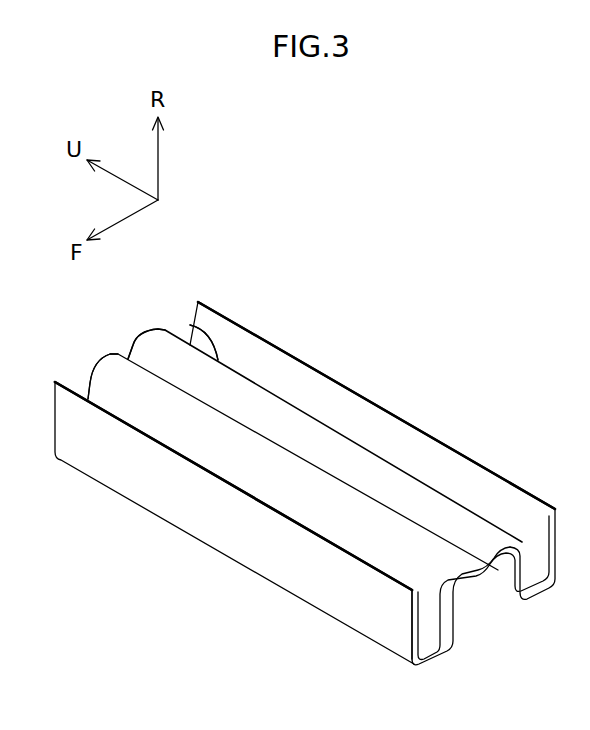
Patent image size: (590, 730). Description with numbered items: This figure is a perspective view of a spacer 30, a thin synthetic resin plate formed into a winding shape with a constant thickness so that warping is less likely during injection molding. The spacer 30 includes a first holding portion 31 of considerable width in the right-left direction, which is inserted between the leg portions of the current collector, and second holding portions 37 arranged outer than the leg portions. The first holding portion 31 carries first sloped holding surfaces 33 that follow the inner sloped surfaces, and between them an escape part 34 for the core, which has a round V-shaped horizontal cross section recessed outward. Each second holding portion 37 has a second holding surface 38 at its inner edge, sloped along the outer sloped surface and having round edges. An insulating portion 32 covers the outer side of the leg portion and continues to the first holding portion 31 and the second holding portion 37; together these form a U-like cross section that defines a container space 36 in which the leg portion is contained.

The spacer 30 is at (253, 220).
The first holding portion 31 is at (247, 403).
The insulating portion 32 is at (490, 490).
The first sloped holding surface 33 is at (497, 538).
The escape part 34 is at (375, 503).
The container space 36 is at (190, 325).
The second holding portion 37 is at (318, 392).
The second holding surface 38 is at (447, 447).